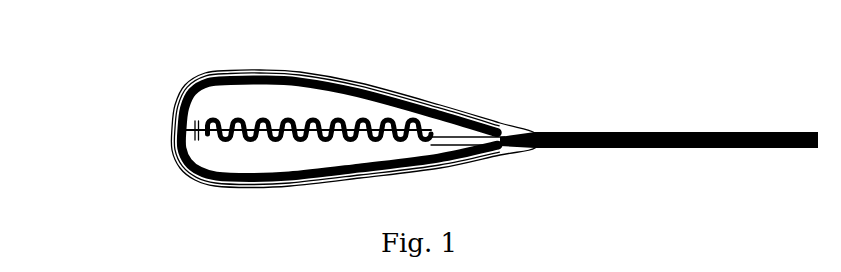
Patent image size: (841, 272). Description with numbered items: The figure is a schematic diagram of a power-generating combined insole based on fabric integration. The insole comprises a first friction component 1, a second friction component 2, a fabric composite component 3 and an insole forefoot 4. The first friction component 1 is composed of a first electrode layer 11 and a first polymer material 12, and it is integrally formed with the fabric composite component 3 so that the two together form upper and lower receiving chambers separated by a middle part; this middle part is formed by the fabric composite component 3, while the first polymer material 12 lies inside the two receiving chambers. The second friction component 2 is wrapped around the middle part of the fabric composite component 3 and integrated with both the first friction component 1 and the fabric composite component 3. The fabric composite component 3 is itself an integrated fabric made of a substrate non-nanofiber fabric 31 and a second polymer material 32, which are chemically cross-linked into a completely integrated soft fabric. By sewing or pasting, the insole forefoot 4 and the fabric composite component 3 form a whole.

The first friction component 1 is at (76, 117).
The first electrode layer 11 is at (192, 90).
The first polymer material 12 is at (182, 112).
The second friction component 2 is at (287, 128).
The fabric composite component 3 is at (76, 173).
The substrate non-nanofiber fabric 31 is at (173, 148).
The second polymer material 32 is at (180, 165).
The insole forefoot 4 is at (560, 132).